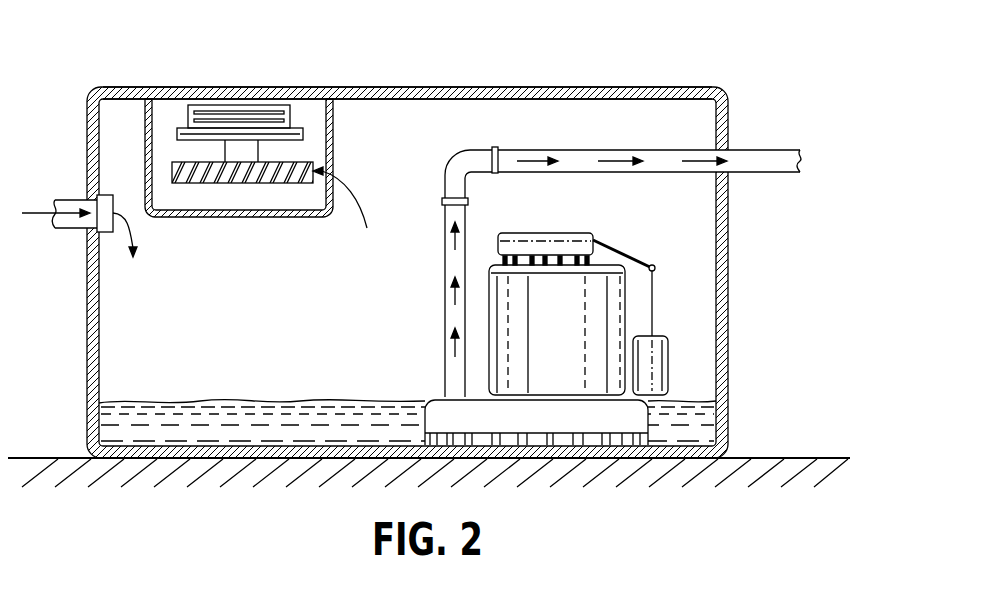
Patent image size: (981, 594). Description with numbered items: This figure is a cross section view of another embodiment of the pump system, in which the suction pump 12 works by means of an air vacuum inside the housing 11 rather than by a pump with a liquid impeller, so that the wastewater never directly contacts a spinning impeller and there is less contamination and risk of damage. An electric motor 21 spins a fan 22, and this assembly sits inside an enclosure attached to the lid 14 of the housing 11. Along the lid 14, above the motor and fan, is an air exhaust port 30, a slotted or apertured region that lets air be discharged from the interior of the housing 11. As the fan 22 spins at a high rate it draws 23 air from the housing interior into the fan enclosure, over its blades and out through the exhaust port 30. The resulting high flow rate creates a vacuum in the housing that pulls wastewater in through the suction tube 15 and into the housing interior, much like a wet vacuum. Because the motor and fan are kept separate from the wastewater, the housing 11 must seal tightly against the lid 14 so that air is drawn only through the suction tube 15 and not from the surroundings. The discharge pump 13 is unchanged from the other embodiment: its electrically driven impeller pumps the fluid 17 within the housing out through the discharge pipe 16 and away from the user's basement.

The housing 11 is at (728, 305).
The suction pump 12 is at (267, 129).
The discharge pump 13 is at (675, 290).
The lid 14 is at (396, 87).
The suction tube 15 is at (53, 200).
The discharge pipe 16 is at (760, 143).
The fluid 17 is at (258, 398).
The electric motor 21 is at (290, 118).
The fan 22 is at (232, 180).
The air draw 23 is at (367, 228).
The air exhaust port 30 is at (195, 88).